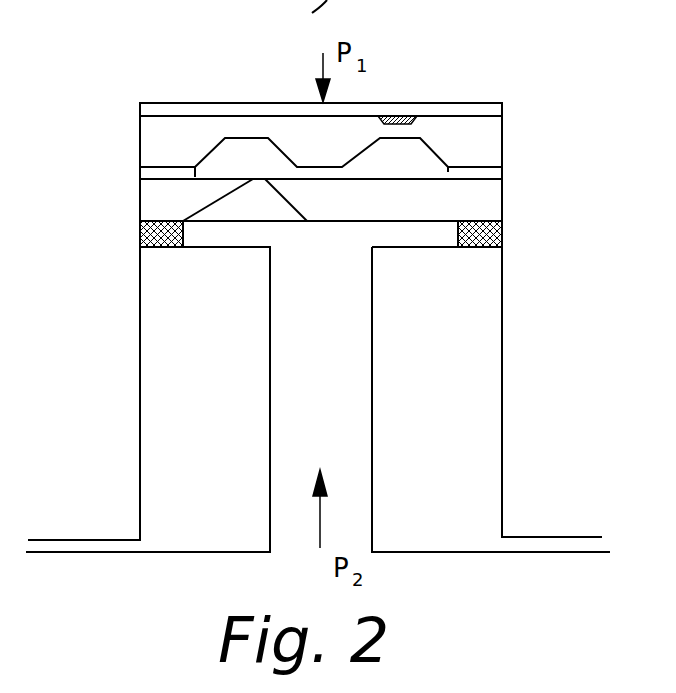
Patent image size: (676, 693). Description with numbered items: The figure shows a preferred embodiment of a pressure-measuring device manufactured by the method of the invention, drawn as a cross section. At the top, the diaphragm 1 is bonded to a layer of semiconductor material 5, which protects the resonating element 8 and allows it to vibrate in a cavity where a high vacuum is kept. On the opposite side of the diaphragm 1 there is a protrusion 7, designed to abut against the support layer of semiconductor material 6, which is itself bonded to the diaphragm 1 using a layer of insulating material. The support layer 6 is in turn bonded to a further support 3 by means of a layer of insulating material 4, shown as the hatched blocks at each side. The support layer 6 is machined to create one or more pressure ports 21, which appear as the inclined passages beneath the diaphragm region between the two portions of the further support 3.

The diaphragm 1 is at (483, 137).
The further support 3 is at (173, 392).
The layer of insulating material 4 is at (138, 240).
The layer of semiconductor material 5 is at (162, 107).
The support layer of semiconductor material 6 is at (483, 202).
The protrusion 7 is at (273, 153).
The resonating element 8 is at (398, 117).
The pressure port 21 is at (260, 190).